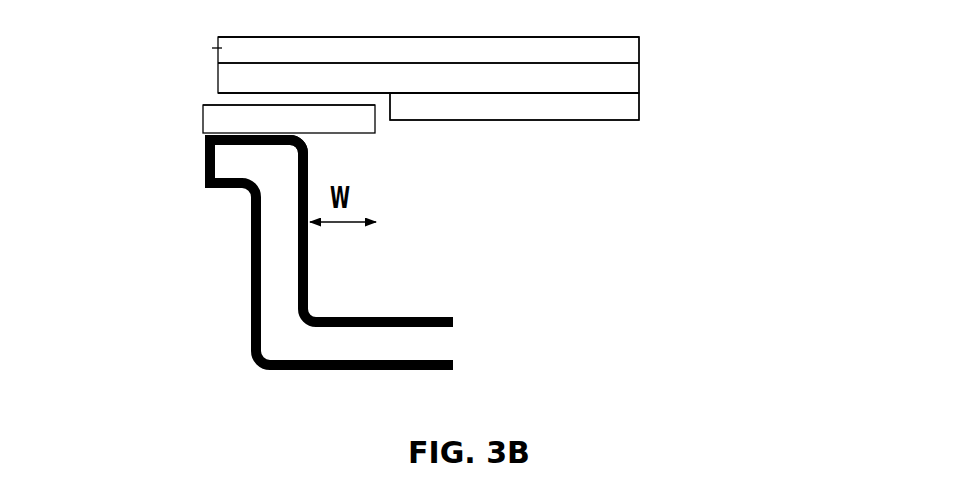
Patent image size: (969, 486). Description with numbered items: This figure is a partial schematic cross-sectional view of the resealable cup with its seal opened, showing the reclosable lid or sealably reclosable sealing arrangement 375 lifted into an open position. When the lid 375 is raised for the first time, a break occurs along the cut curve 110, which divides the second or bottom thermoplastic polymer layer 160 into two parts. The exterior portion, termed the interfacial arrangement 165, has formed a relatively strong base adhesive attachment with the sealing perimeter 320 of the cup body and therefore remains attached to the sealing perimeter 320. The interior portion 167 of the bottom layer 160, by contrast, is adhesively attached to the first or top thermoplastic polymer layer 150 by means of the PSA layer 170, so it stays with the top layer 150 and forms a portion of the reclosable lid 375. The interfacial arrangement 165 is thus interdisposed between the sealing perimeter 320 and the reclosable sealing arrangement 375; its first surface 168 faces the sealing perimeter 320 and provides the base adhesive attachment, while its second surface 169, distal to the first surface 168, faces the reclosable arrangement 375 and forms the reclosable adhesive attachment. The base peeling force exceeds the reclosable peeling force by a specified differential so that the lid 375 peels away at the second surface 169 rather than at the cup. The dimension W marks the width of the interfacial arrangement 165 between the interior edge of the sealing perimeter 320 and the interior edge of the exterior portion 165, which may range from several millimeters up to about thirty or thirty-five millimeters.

The first thermoplastic polymer layer 150 is at (230, 48).
The PSA layer 170 is at (240, 82).
The second surface 169 is at (240, 102).
The interior portion 167 is at (640, 107).
The interfacial arrangement 165 is at (200, 119).
The second thermoplastic polymer layer 160 is at (642, 152).
The cut curve 110 is at (388, 135).
The sealing perimeter 320 is at (250, 143).
The first surface 168 is at (322, 137).
The reclosable lid 375 is at (680, 57).